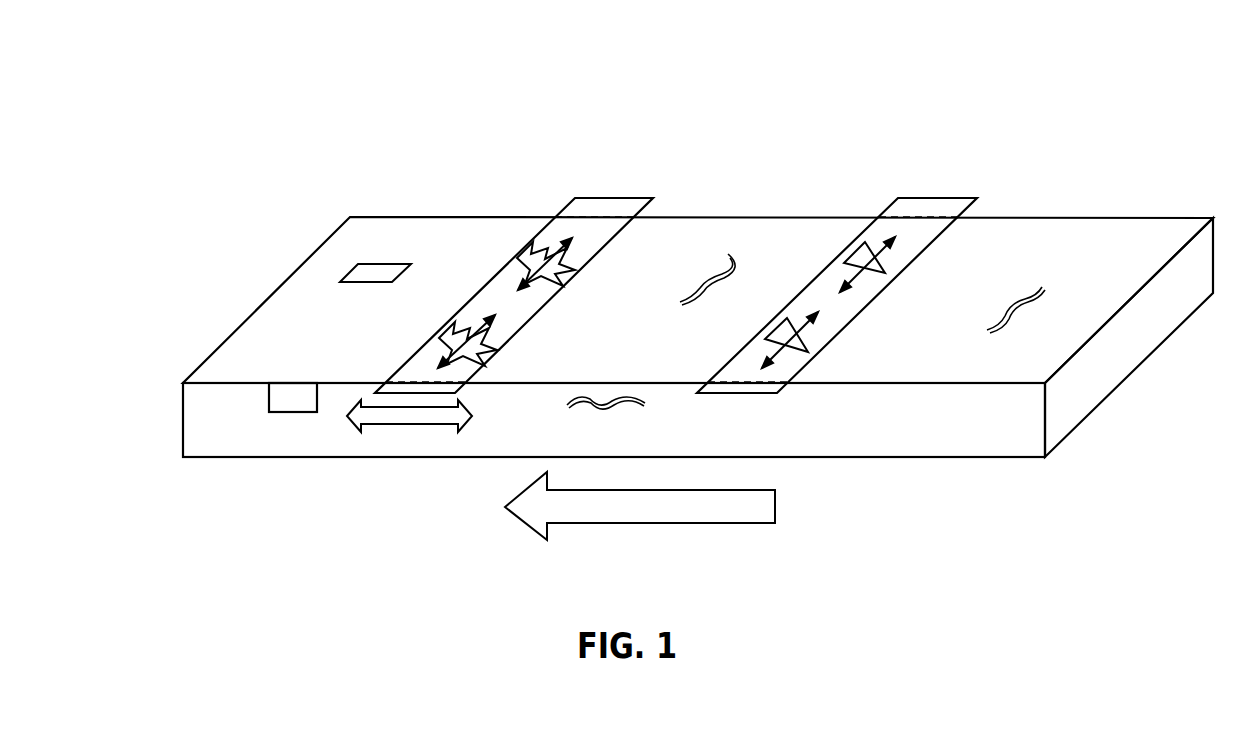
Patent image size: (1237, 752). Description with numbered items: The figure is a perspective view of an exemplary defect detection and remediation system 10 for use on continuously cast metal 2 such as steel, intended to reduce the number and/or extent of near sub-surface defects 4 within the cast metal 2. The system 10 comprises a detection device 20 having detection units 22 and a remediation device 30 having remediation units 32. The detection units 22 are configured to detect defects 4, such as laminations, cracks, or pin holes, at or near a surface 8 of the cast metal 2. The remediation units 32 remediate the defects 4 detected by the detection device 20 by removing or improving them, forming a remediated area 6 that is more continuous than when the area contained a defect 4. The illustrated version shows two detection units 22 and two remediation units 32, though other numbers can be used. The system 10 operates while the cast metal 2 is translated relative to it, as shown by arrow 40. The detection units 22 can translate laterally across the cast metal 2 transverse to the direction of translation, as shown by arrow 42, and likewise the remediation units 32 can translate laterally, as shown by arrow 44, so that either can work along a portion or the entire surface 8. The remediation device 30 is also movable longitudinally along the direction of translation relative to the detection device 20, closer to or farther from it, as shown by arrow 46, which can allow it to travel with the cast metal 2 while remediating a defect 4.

The defect detection and remediation system 10 is at (698, 245).
The cast metal 2 is at (272, 293).
The defects 4 is at (703, 257).
The remediated area 6 is at (379, 272).
The surface 8 is at (1095, 247).
The detection device 20 is at (937, 198).
The detection units 22 is at (778, 317).
The remediation device 30 is at (608, 198).
The remediation units 32 is at (449, 323).
The arrow 40 is at (712, 510).
The arrow 42 is at (790, 355).
The arrow 44 is at (440, 345).
The arrow 46 is at (375, 417).